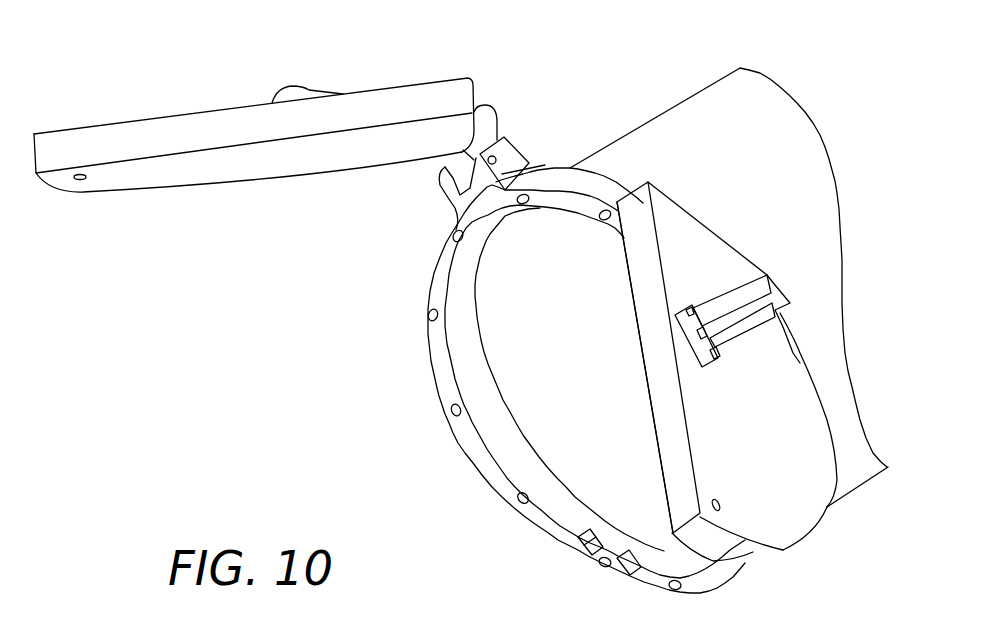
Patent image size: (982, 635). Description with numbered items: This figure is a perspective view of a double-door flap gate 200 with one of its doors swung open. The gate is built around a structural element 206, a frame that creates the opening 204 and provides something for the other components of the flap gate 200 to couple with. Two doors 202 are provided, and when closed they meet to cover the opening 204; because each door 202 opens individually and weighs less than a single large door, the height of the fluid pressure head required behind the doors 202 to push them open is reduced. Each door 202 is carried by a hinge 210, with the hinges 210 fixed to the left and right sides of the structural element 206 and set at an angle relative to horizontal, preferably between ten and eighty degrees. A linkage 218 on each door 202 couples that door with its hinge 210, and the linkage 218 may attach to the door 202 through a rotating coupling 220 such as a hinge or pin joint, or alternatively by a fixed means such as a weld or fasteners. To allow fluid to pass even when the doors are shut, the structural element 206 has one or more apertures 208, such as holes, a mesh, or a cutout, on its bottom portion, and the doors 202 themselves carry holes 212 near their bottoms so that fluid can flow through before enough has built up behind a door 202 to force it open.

The double-door flap gate 200 is at (163, 72).
The door 202 is at (241, 181).
The opening 204 is at (504, 308).
The structural element 206 is at (502, 440).
The aperture 208 is at (627, 560).
The hinge 210 is at (505, 153).
The hole 212 is at (80, 181).
The linkage 218 is at (742, 327).
The rotating coupling 220 is at (718, 363).